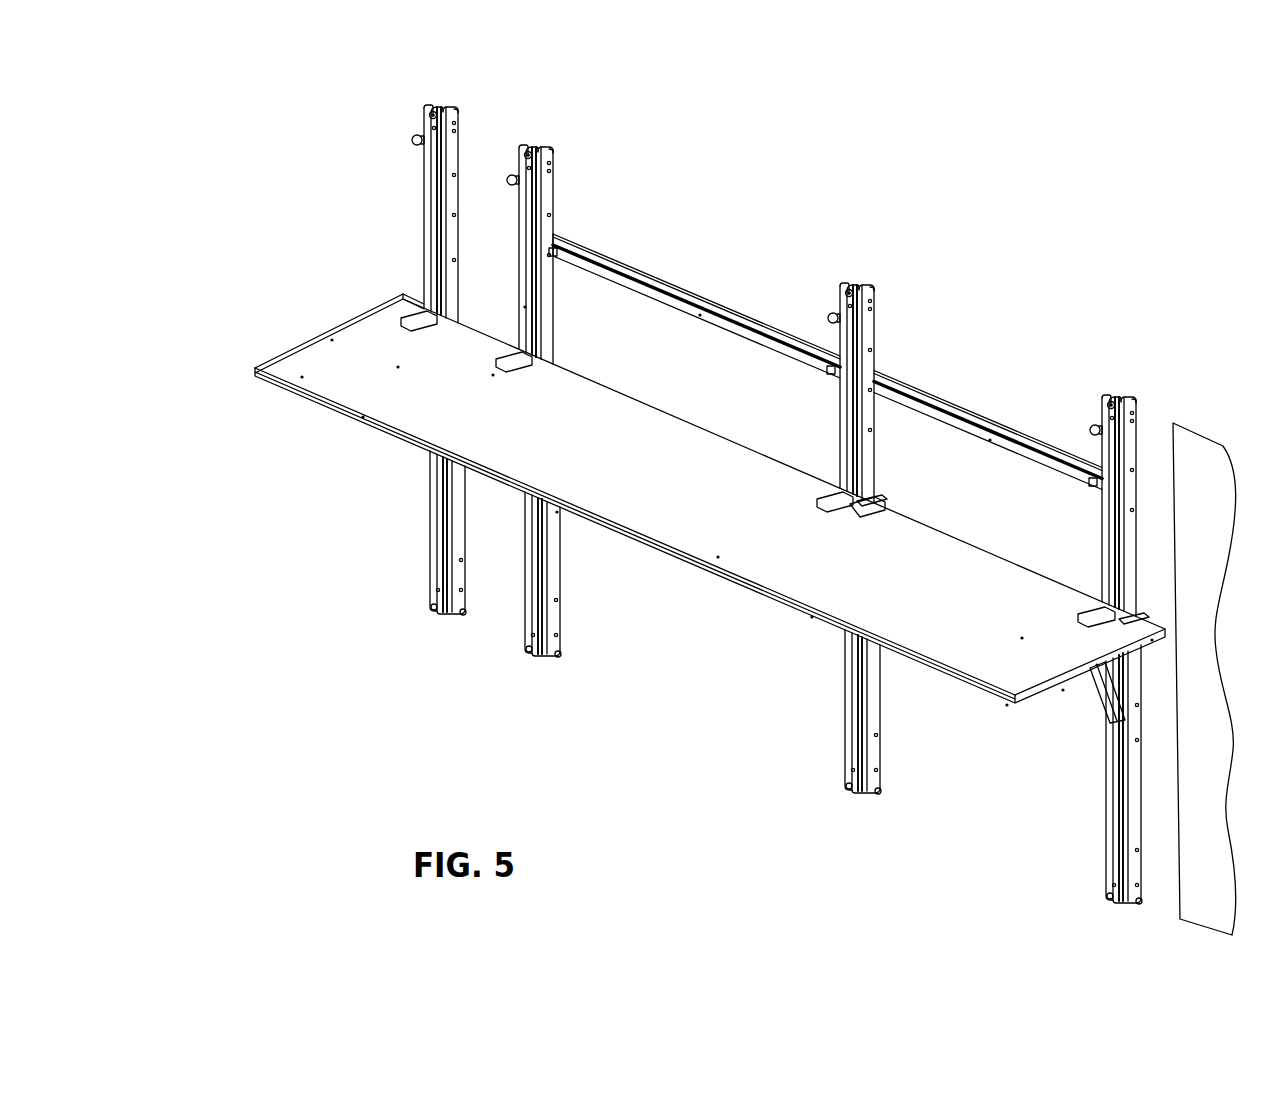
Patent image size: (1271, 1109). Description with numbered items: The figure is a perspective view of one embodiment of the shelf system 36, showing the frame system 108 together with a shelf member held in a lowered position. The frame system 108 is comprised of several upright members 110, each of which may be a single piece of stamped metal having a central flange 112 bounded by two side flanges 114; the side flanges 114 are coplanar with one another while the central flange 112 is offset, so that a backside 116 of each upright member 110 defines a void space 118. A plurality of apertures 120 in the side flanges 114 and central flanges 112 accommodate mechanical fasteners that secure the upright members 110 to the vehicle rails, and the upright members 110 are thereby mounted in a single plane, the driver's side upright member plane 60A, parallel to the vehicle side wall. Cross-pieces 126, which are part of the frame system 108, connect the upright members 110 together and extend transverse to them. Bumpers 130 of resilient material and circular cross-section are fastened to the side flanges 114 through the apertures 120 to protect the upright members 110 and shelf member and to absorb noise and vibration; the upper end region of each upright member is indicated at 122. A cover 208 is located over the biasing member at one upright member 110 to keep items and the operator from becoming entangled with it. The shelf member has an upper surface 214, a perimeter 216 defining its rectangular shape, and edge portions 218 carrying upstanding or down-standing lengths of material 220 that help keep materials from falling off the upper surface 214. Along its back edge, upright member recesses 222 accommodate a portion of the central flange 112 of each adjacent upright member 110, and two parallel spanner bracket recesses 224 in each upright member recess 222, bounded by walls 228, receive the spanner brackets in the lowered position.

The shelf system 36 is at (728, 210).
The driver's side upright member plane 60A is at (1205, 430).
The frame system 108 is at (1198, 358).
The upright member 110 is at (424, 203).
The central flange 112 is at (432, 242).
The side flanges 114 is at (428, 107).
The backside 116 is at (435, 104).
The void space 118 is at (448, 102).
The apertures 120 is at (562, 607).
The post top assembly 122 is at (396, 118).
The cross-pieces 126 is at (642, 274).
The bumpers 130 is at (412, 141).
The cover 208 is at (1125, 691).
The upper surface 214 is at (316, 364).
The perimeter 216 is at (257, 388).
The edge portions 218 is at (387, 445).
The lengths of material 220 is at (354, 322).
The upright member recess 222 is at (860, 492).
The spanner bracket recesses 224 is at (512, 372).
The walls 228 is at (412, 328).